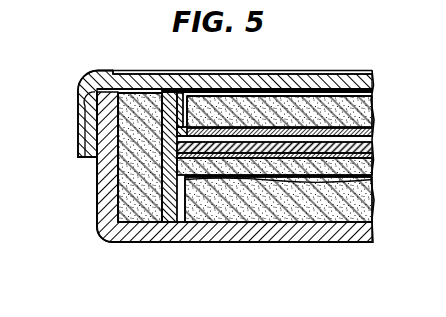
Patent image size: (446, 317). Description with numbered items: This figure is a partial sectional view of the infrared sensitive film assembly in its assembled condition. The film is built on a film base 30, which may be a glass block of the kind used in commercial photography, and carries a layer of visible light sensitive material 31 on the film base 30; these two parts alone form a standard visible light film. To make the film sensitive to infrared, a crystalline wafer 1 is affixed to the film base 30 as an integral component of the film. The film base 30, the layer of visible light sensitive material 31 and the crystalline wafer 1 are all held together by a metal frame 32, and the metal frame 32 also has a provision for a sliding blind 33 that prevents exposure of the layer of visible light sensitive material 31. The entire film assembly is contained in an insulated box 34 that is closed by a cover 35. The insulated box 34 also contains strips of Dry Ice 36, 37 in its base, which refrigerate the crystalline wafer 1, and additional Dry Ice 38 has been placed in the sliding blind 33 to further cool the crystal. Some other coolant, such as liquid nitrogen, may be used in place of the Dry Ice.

The crystalline wafer 1 is at (373, 148).
The film base 30 is at (375, 176).
The layer of visible light sensitive material 31 is at (373, 161).
The metal frame 32 is at (172, 91).
The sliding blind 33 is at (373, 133).
The insulated box 34 is at (100, 226).
The cover 35 is at (78, 98).
The strip of Dry Ice 36 is at (137, 172).
The strip of Dry Ice 37 is at (363, 200).
The Dry Ice 38 is at (356, 113).